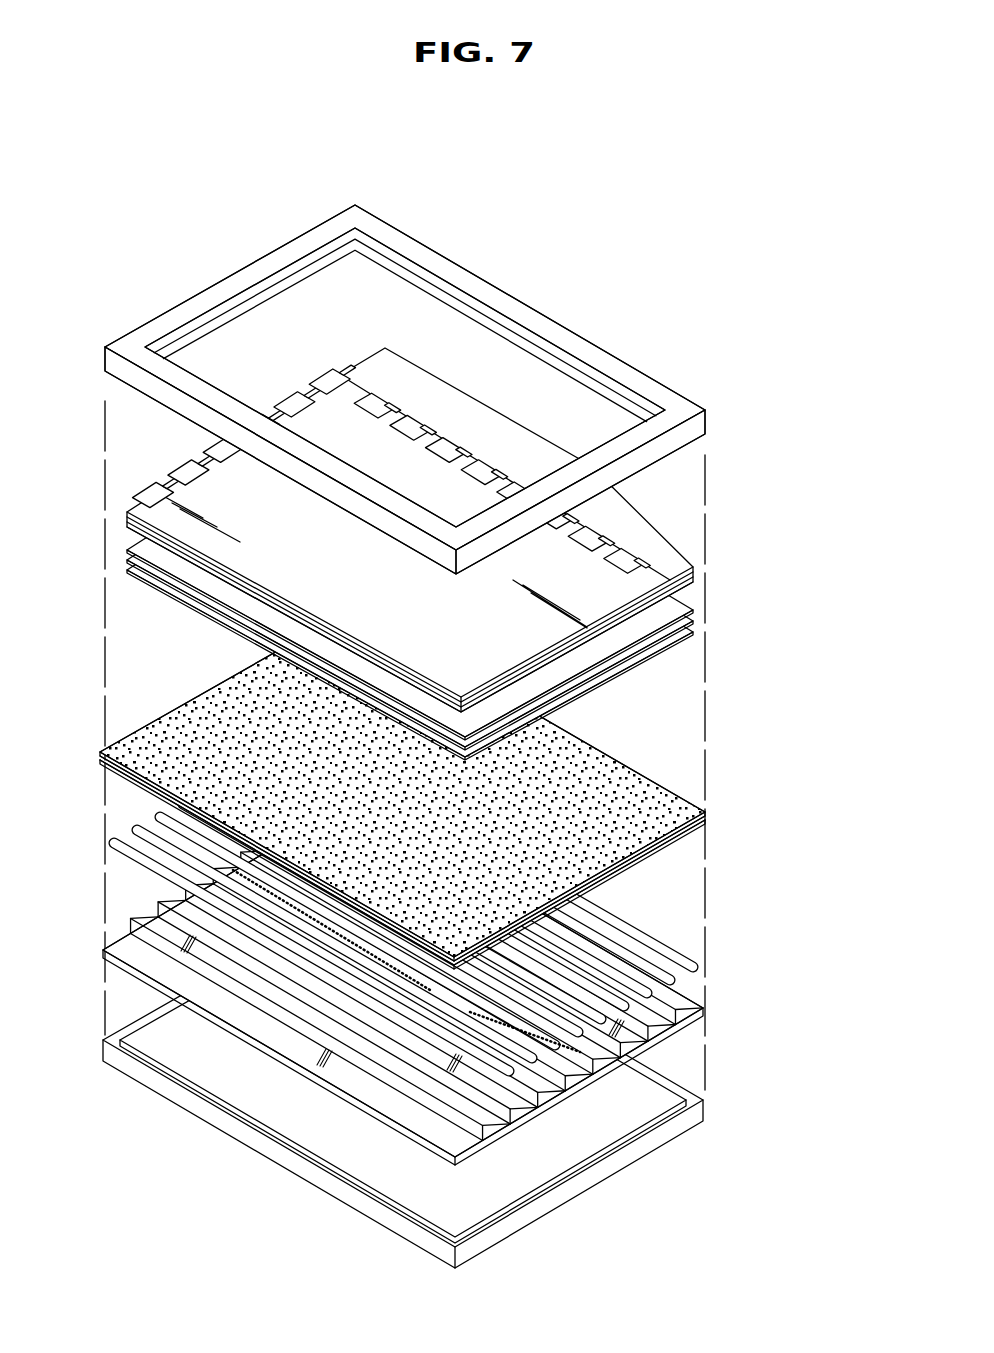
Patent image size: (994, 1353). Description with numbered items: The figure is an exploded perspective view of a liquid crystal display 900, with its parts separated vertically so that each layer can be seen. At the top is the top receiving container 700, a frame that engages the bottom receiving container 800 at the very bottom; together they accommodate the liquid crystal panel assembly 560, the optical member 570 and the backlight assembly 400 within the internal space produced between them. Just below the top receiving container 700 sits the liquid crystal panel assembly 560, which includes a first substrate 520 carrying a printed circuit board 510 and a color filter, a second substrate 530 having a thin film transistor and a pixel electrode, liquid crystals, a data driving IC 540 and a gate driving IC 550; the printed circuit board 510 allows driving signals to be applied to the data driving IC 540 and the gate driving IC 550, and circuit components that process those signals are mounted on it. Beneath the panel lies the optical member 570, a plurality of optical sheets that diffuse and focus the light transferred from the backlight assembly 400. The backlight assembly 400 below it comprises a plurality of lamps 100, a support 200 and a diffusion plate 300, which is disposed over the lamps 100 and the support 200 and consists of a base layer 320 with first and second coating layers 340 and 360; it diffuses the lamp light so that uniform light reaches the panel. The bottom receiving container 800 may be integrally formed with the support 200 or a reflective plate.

The lamps 100 is at (686, 958).
The support 200 is at (697, 1017).
The diffusion plate 300 is at (475, 788).
The base layer 320 is at (704, 816).
The first coating layer 340 is at (704, 822).
The second coating layer 360 is at (704, 812).
The backlight assembly 400 is at (509, 886).
The printed circuit board 510 is at (630, 537).
The first substrate 520 is at (650, 568).
The second substrate 530 is at (663, 580).
The data driving IC 540 is at (643, 555).
The gate driving IC 550 is at (143, 485).
The liquid crystal panel assembly 560 is at (438, 530).
The optical member 570 is at (117, 539).
The top receiving container 700 is at (480, 292).
The bottom receiving container 800 is at (658, 1138).
The liquid crystal display 900 is at (519, 175).